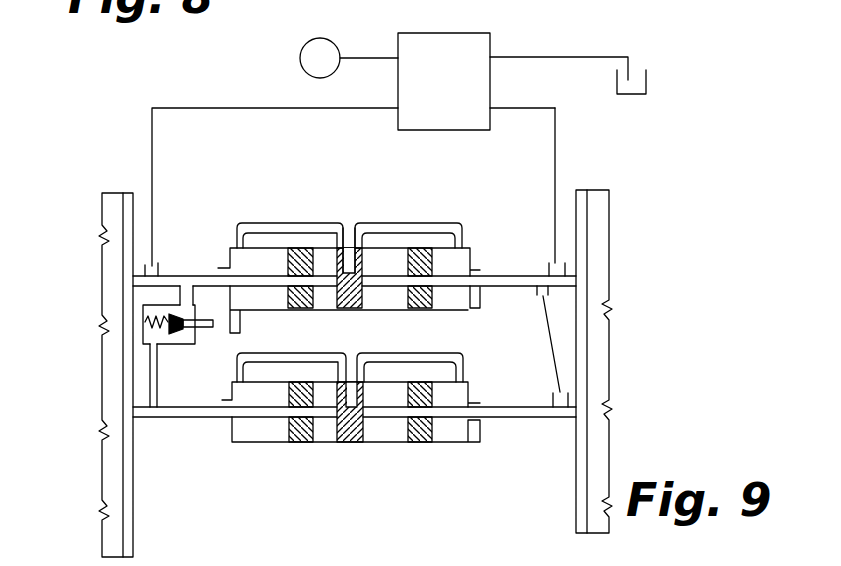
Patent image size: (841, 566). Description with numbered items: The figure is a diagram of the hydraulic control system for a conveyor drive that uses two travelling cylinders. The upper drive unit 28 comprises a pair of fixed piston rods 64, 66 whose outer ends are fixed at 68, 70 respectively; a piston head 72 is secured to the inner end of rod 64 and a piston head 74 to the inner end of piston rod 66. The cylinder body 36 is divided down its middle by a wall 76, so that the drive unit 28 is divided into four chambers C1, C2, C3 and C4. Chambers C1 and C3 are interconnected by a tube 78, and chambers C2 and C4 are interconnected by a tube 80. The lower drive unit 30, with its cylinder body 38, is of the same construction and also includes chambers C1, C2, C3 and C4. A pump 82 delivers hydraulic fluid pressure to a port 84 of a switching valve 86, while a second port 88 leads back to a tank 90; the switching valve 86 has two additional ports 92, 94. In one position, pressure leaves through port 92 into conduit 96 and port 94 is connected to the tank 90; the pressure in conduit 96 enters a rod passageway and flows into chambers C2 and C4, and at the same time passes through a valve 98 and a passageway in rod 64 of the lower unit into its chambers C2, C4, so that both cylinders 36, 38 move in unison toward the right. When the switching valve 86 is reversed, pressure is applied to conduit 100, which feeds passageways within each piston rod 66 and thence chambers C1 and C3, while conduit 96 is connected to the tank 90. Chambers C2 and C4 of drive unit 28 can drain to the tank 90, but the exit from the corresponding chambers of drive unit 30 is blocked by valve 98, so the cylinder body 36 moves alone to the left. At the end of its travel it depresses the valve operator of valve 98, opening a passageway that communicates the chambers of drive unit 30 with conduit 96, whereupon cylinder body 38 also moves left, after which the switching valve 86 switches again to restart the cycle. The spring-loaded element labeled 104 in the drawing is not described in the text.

The drive unit 28 is at (214, 236).
The drive unit 30 is at (250, 450).
The cylinder body 36 is at (268, 238).
The cylinder body 38 is at (400, 447).
The piston rod 64 is at (183, 275).
The piston rod 66 is at (505, 275).
The fixed connection 68 is at (142, 292).
The fixed connection 70 is at (568, 294).
The piston head 72 is at (320, 247).
The piston head 74 is at (432, 246).
The wall 76 is at (348, 306).
The tube 78 is at (354, 220).
The tube 80 is at (450, 223).
The pump 82 is at (335, 44).
The port 84 is at (388, 56).
The switching valve 86 is at (466, 40).
The second port 88 is at (496, 57).
The tank 90 is at (634, 89).
The port 92 is at (394, 116).
The port 94 is at (495, 108).
The conduit 96 is at (170, 106).
The valve 98 is at (163, 356).
The conduit 100 is at (557, 150).
The spring-loaded relief valve 104 is at (170, 322).
The chamber C1 is at (257, 298).
The chamber C2 is at (460, 302).
The chamber C3 is at (398, 302).
The chamber C4 is at (323, 298).